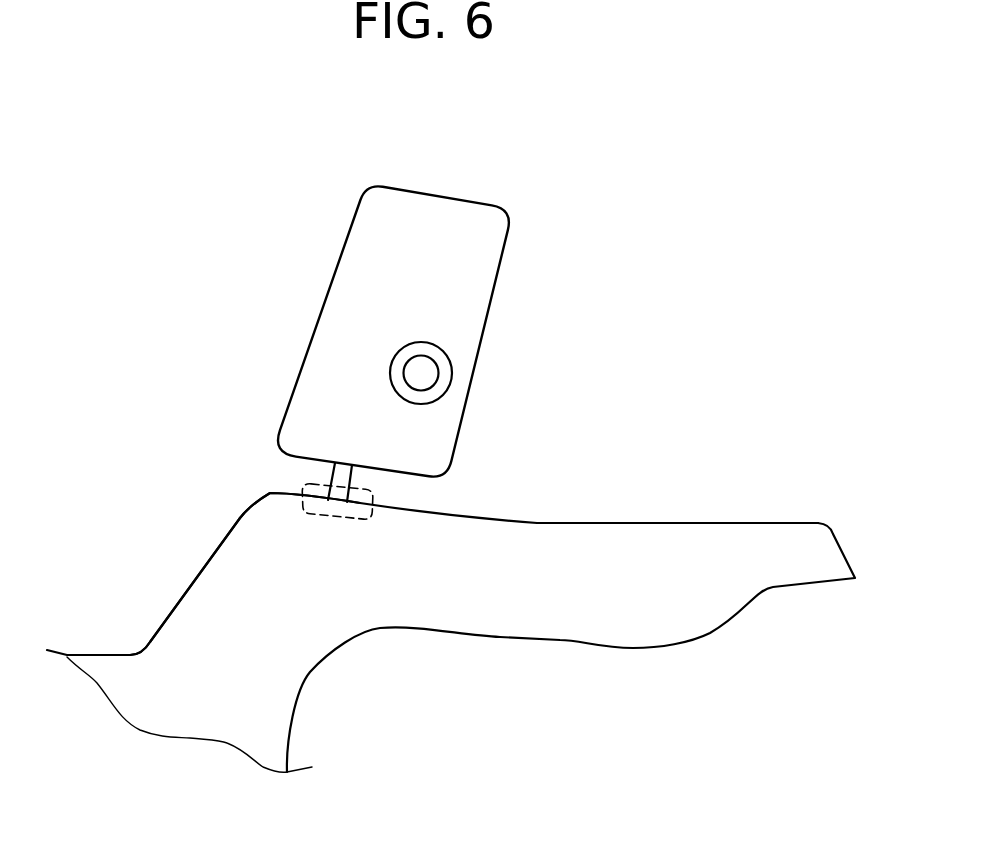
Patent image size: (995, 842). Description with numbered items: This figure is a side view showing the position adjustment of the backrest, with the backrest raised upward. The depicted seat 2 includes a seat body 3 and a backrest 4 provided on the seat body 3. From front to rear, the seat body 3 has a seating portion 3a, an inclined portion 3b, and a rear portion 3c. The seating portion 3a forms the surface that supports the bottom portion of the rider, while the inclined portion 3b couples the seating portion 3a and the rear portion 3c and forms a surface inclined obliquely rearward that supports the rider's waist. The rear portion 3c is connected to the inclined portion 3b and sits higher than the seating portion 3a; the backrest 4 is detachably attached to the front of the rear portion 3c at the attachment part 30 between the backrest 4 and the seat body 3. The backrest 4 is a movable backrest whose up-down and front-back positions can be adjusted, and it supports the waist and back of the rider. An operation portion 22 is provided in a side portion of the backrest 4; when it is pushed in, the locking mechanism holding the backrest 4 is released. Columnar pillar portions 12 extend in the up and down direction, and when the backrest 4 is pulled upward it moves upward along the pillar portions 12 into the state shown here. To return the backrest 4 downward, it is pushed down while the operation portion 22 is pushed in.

The seat 2 is at (651, 131).
The seat body 3 is at (752, 548).
The seating portion 3a is at (85, 618).
The inclined portion 3b is at (167, 528).
The rear portion 3c is at (640, 475).
The backrest 4 is at (417, 215).
The pillar portion 12 is at (357, 477).
The operation portion 22 is at (421, 373).
The attachment part 30 is at (315, 480).